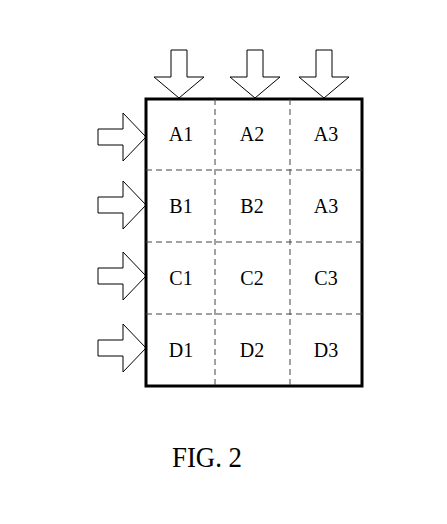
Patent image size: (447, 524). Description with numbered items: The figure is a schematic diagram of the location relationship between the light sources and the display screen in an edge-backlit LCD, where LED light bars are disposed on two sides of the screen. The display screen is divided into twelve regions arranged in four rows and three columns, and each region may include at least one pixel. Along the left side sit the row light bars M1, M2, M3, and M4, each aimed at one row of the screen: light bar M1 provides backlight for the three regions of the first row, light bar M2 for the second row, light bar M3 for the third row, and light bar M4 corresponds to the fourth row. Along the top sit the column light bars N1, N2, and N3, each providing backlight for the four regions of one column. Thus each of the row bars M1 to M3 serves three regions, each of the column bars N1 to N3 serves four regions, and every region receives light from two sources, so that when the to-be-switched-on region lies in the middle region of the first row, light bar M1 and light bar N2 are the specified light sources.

The LED light bar N1 is at (179, 50).
The LED light bar N2 is at (255, 50).
The LED light bar N3 is at (324, 50).
The LED light bar M1 is at (98, 137).
The LED light bar M2 is at (98, 205).
The LED light bar M3 is at (98, 276).
The LED light bar M4 is at (98, 348).